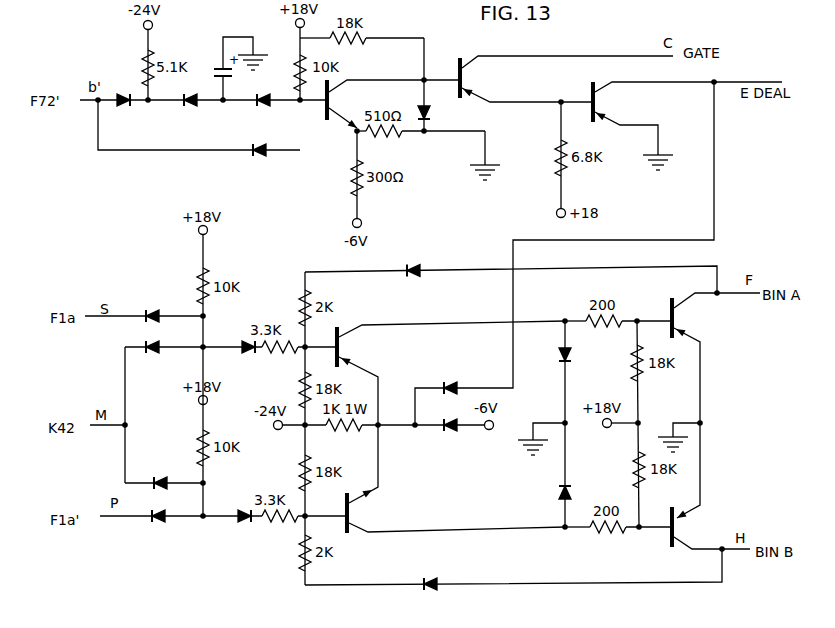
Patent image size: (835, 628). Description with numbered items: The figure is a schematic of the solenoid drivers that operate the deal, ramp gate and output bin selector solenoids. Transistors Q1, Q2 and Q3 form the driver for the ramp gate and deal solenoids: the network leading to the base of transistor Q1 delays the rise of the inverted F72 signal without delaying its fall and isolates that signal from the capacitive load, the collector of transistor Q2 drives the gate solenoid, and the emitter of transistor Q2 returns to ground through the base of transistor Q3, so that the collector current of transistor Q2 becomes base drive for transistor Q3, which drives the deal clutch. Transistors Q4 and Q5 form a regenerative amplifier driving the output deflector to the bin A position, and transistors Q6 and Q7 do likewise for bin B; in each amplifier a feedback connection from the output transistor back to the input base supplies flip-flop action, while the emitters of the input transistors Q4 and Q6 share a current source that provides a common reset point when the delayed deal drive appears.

The transistor Q1 is at (393, 105).
The transistor Q2 is at (566, 79).
The transistor Q3 is at (687, 118).
The transistor Q4 is at (451, 373).
The transistor Q5 is at (716, 358).
The transistor Q6 is at (456, 479).
The transistor Q7 is at (711, 486).